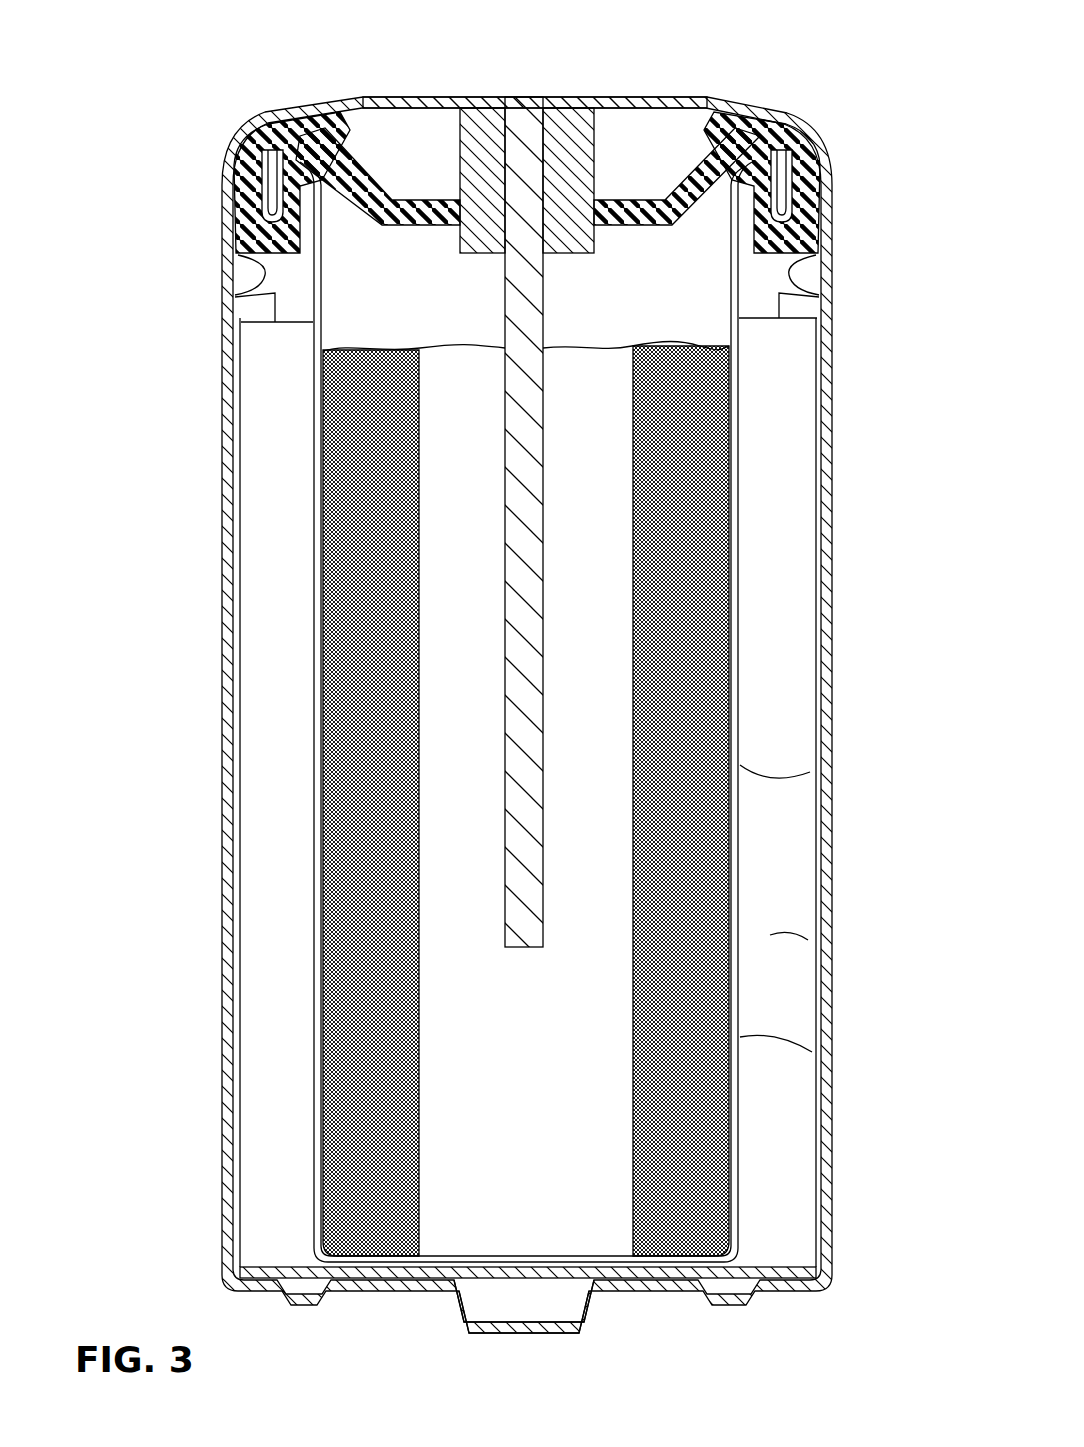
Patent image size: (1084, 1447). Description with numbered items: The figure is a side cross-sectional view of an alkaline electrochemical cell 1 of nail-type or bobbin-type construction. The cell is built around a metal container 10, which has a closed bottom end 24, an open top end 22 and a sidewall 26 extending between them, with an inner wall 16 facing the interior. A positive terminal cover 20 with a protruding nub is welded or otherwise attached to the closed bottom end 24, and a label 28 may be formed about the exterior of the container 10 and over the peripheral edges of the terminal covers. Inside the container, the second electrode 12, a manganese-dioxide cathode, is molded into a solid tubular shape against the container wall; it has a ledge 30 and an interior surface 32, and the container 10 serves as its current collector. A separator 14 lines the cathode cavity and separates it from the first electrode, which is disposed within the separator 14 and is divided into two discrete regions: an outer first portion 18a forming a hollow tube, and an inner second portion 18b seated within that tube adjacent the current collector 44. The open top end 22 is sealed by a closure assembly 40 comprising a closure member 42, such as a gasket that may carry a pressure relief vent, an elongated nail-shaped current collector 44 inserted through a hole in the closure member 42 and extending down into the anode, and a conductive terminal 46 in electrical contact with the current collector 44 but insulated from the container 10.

The electrochemical cell 1 is at (827, 577).
The container 10 is at (823, 442).
The second electrode 12 is at (770, 940).
The separator 14 is at (737, 1037).
The inner wall 16 is at (805, 307).
The first portion 18a is at (690, 897).
The second portion 18b is at (625, 826).
The terminal cover 20 is at (617, 1294).
The top end 22 is at (742, 110).
The closed bottom end 24 is at (423, 1280).
The sidewall 26 is at (236, 826).
The label 28 is at (234, 563).
The ledge 30 is at (240, 305).
The interior surface 32 is at (745, 777).
The closure assembly 40 is at (653, 165).
The closure member 42 is at (376, 185).
The current collector 44 is at (535, 735).
The conductive terminal 46 is at (548, 97).